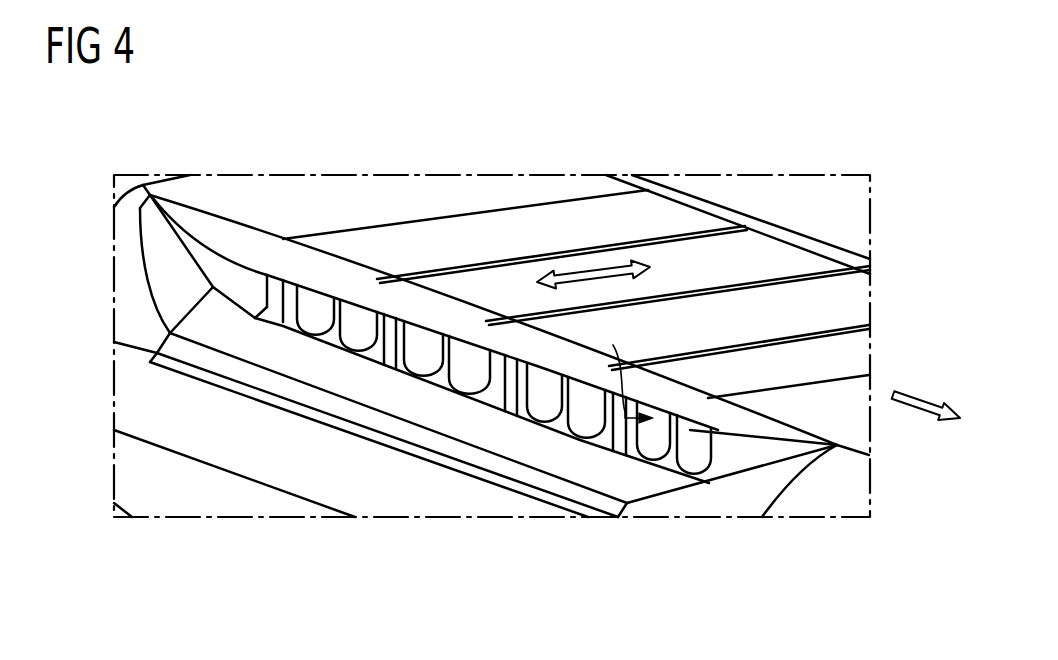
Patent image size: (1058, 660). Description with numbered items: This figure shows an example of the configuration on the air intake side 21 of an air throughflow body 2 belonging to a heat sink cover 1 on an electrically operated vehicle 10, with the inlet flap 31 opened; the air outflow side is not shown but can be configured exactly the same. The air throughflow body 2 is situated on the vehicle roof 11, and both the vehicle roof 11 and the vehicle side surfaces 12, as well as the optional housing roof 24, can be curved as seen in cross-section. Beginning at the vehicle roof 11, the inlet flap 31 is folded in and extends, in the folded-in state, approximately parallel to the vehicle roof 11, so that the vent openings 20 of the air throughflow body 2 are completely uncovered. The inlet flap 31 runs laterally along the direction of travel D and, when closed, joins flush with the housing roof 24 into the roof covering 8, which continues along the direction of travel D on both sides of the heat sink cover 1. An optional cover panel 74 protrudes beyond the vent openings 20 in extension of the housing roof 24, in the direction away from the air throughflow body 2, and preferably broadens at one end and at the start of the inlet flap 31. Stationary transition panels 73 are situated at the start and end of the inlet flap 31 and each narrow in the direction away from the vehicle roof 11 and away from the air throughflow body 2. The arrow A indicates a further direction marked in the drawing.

The heat sink cover 1 is at (711, 170).
The air throughflow body 2 is at (628, 368).
The roof covering 8 is at (140, 182).
The electrically operated vehicle 10 is at (113, 483).
The vehicle roof 11 is at (438, 502).
The vehicle side surfaces 12 is at (210, 501).
The vent openings 20 is at (688, 430).
The air intake side 21 is at (421, 428).
The housing roof 24 is at (765, 258).
The inlet flap 31 is at (594, 480).
The transition panels 73 is at (158, 270).
The cover panel 74 is at (255, 240).
The direction A is at (593, 274).
The direction of travel D is at (905, 390).